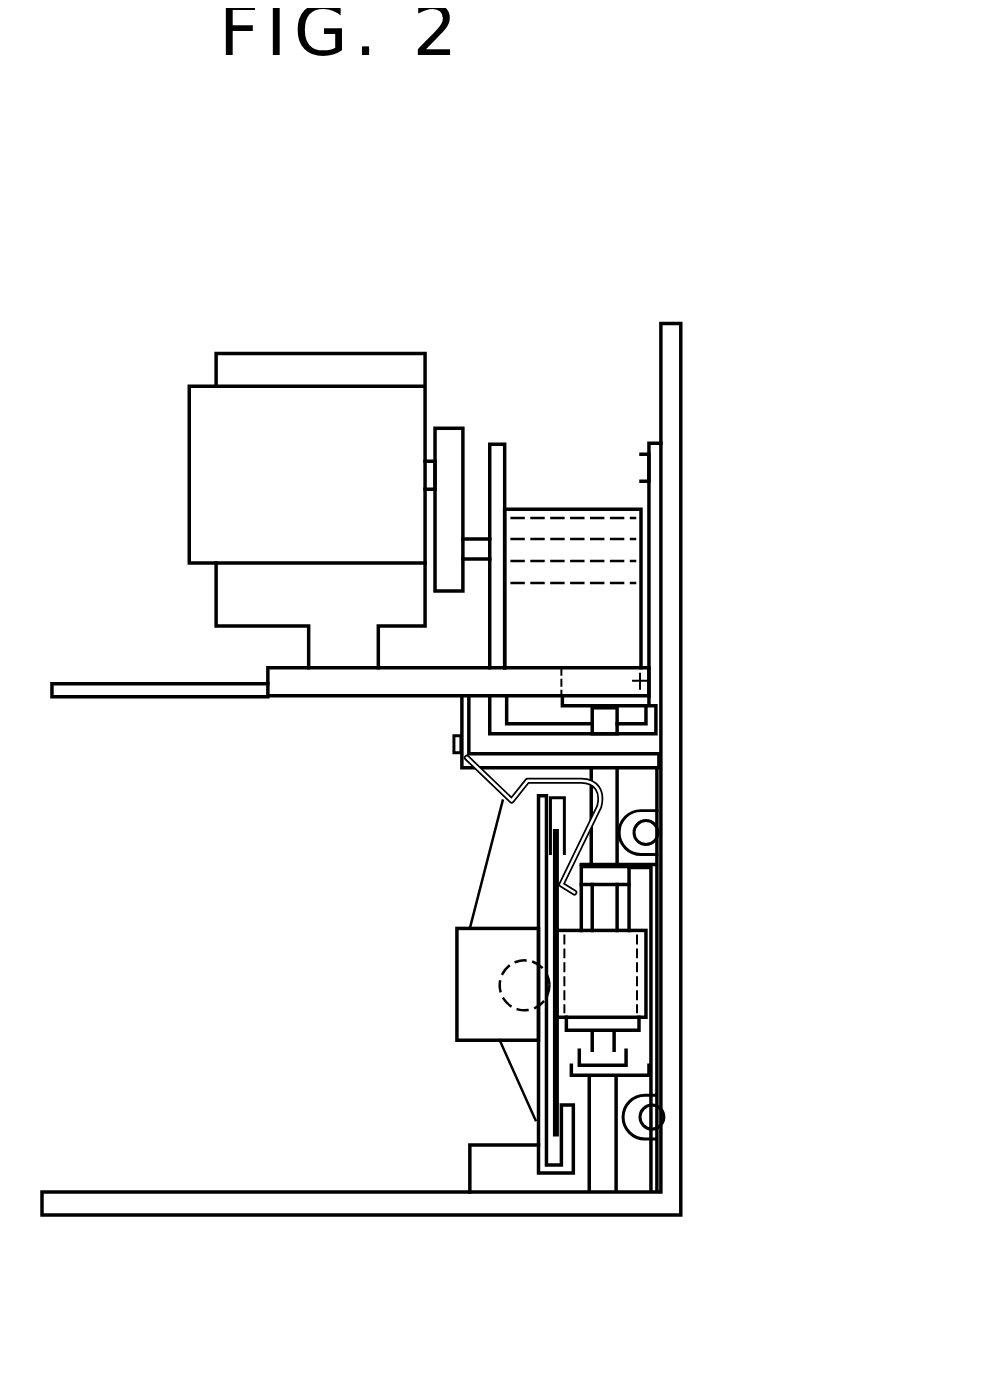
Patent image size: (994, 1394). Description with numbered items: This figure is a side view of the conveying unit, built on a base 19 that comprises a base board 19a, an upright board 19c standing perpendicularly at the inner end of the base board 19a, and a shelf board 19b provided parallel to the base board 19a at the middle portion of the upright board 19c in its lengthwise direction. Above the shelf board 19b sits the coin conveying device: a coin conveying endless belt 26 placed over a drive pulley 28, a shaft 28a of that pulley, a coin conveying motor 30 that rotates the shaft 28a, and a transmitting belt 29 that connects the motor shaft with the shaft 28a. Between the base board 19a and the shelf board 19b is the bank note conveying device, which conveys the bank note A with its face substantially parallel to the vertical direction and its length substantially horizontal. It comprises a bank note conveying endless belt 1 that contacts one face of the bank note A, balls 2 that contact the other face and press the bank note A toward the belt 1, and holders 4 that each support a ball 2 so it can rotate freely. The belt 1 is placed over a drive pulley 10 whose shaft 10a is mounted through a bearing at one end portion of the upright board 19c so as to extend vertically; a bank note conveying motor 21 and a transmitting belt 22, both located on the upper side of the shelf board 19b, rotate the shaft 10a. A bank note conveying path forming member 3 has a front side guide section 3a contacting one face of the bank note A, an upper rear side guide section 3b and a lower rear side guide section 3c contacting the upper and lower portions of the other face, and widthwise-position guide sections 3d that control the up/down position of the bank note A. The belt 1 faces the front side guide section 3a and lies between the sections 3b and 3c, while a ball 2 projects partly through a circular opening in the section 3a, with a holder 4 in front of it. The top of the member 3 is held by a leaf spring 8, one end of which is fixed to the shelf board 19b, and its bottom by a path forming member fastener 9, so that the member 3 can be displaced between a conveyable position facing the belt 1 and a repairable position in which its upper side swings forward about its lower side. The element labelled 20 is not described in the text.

The bank note conveying endless belt 1 is at (620, 982).
The ball 2 is at (470, 1000).
The bank note conveying path forming member 3 is at (538, 845).
The front side guide section 3a is at (538, 1085).
The upper rear side guide section 3b is at (490, 775).
The lower rear side guide section 3c is at (613, 1178).
The widthwise-position guide section 3d is at (527, 786).
The holder 4 is at (455, 937).
The leaf spring 8 is at (454, 745).
The path forming member fastener 9 is at (508, 1180).
The drive pulley 10 is at (640, 950).
The shaft of the drive pulley 10a is at (608, 783).
The base 19 is at (683, 772).
The base board 19a is at (257, 1215).
The shelf board 19b is at (625, 737).
The upright board 19c is at (667, 1178).
The mounting screw 20 is at (648, 676).
The bank note conveying motor 21 is at (225, 600).
The transmitting belt 22 is at (432, 683).
The coin conveying endless belt 26 is at (562, 525).
The drive pulley 28 is at (583, 585).
The shaft of the drive pulley 28a is at (480, 545).
The transmitting belt 29 is at (457, 430).
The coin conveying motor 30 is at (200, 432).
The bank note A is at (555, 897).